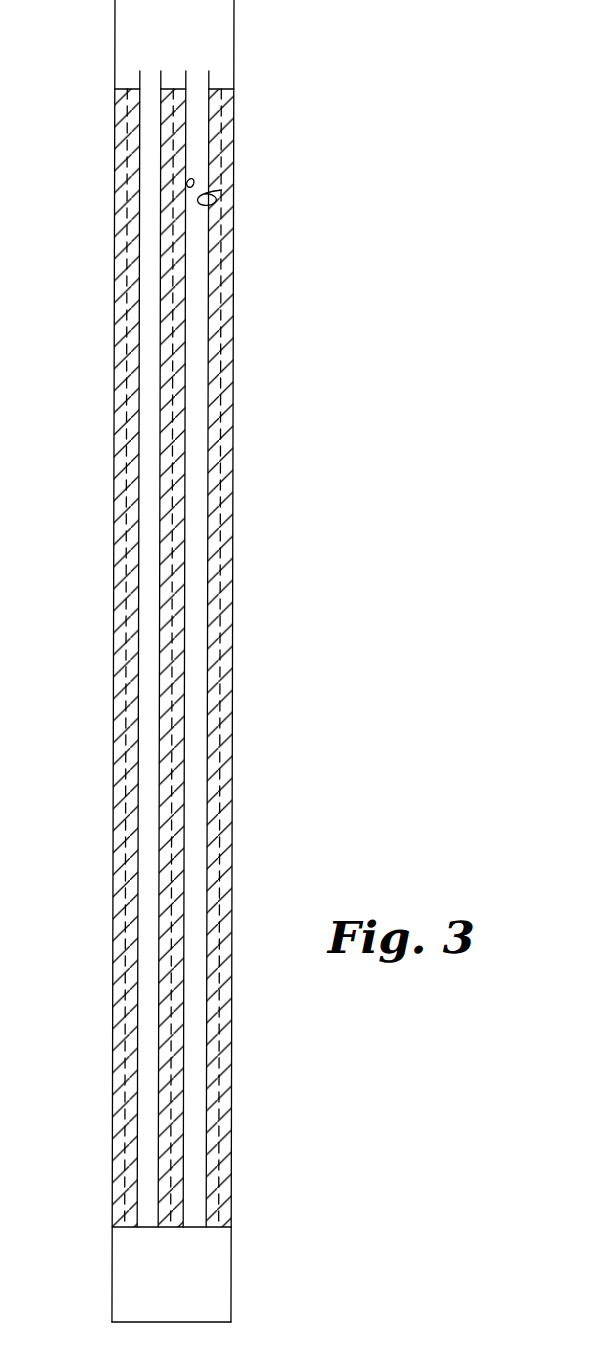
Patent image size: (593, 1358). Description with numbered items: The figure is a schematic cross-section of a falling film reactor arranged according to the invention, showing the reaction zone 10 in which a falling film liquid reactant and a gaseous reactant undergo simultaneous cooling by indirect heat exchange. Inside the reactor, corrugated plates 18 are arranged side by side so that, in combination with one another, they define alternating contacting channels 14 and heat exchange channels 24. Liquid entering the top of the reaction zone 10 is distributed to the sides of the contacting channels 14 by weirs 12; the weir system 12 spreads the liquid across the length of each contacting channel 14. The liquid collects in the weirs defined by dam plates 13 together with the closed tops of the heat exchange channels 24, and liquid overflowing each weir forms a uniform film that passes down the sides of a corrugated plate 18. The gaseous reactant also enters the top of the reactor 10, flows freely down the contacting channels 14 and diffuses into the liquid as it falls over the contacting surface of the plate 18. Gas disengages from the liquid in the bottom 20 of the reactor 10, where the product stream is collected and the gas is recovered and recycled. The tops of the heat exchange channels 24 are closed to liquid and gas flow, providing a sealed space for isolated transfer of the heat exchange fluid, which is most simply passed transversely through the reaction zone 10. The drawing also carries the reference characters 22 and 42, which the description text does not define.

The reaction zone 10 is at (115, 32).
The weirs 12 is at (128, 80).
The dam plates 13 is at (187, 71).
The contacting channels 14 is at (200, 148).
The corrugated plate 18 is at (187, 183).
The bottom 20 is at (115, 1258).
The surface coating layer 22 is at (187, 303).
The heat exchange channels 24 is at (171, 519).
The plate body 42 is at (122, 288).